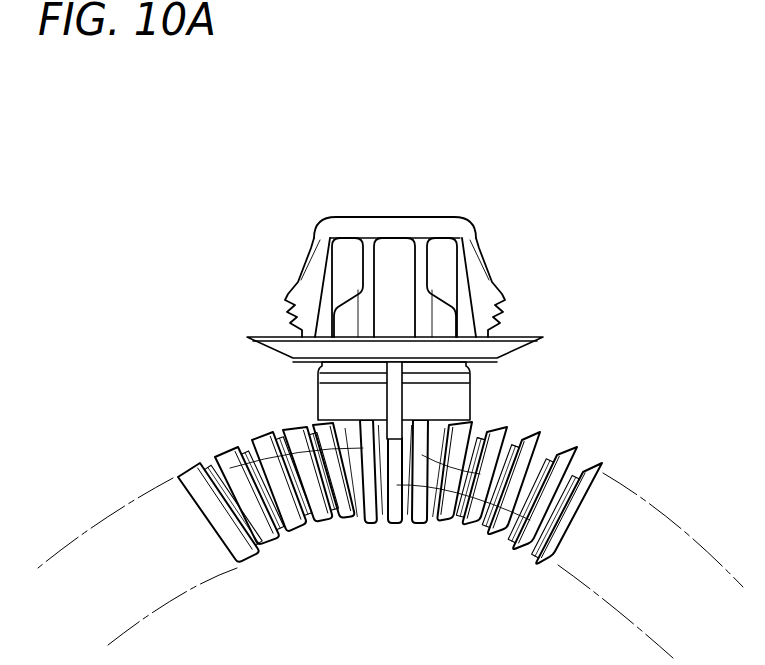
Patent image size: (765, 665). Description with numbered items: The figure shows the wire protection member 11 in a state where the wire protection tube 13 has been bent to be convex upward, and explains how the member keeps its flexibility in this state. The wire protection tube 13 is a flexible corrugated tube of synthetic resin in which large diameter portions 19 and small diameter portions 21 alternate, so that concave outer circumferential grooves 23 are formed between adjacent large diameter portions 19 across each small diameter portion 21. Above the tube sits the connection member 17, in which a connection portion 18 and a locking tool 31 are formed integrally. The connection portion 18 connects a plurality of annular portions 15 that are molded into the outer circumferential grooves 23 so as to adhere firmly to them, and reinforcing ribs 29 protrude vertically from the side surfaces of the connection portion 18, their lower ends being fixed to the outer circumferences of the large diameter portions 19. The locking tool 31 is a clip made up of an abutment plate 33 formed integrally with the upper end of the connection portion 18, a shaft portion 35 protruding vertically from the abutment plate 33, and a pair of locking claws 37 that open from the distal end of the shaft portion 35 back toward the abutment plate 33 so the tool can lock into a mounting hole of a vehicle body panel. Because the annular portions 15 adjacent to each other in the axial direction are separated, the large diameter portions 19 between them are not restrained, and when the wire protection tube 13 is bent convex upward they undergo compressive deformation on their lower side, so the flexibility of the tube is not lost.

The wire protection member 11 is at (292, 192).
The wire protection tube 13 is at (605, 463).
The annular portions 15 is at (433, 516).
The connection member 17 is at (465, 213).
The connection portion 18 is at (442, 393).
The large diameter portions 19 is at (282, 462).
The small diameter portions 21 is at (283, 523).
The outer circumferential grooves 23 is at (485, 420).
The reinforcing ribs 29 is at (392, 392).
The locking tool 31 is at (358, 215).
The abutment plate 33 is at (532, 337).
The shaft portion 35 is at (393, 258).
The locking claws 37 is at (292, 294).